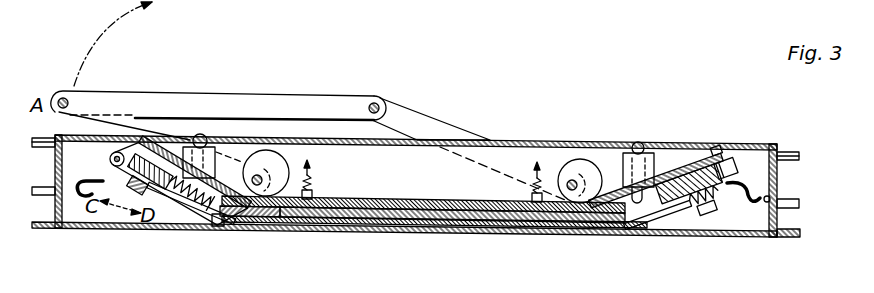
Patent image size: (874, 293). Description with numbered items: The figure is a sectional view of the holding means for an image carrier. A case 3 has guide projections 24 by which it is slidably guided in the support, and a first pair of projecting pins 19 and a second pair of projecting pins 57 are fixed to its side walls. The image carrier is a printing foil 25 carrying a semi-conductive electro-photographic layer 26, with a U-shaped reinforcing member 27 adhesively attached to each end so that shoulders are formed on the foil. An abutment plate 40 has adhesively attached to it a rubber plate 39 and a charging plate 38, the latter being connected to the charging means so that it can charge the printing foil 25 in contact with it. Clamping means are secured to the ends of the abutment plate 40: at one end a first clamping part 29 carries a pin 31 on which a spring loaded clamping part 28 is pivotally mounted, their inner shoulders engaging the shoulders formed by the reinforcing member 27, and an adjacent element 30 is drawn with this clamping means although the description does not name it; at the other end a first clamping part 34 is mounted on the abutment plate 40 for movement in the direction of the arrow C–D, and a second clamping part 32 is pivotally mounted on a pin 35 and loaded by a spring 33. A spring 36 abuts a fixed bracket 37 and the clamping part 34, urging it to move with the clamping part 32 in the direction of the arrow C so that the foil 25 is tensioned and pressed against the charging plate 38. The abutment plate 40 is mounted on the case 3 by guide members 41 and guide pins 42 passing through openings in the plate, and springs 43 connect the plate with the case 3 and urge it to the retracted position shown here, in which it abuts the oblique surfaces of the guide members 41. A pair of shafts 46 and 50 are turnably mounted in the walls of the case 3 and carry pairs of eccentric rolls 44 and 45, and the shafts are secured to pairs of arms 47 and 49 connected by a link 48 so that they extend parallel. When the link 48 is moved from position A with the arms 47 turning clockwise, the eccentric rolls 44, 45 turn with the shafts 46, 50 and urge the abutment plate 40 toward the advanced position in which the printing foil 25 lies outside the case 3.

The case 3 is at (775, 144).
The first pair of projecting pins 19 is at (790, 204).
The guide projections 24 is at (801, 233).
The printing foil 25 is at (198, 212).
The semi-conductive electro-photographic layer 26 is at (238, 218).
The U-shaped reinforcing member 27 is at (138, 184).
The spring loaded clamping part 28 is at (708, 214).
The first clamping part 29 is at (651, 222).
The slide body 30 is at (708, 158).
The pin 31 is at (724, 170).
The second clamping part 32 is at (146, 207).
The spring 33 is at (143, 160).
The first clamping part 34 is at (150, 168).
The pin 35 is at (116, 151).
The spring 36 is at (181, 200).
The fixed bracket 37 is at (218, 226).
The charging plate 38 is at (306, 207).
The rubber plate 39 is at (370, 213).
The abutment plate 40 is at (422, 223).
The guide members 41 is at (657, 178).
The guide pins 42 is at (637, 187).
The springs 43 is at (537, 183).
The eccentric rolls 44 is at (281, 162).
The eccentric rolls 45 is at (588, 163).
The shaft 46 is at (252, 158).
The arms 47 is at (127, 125).
The link 48 is at (291, 95).
The arms 49 is at (433, 130).
The shaft 50 is at (572, 182).
The second pair of projecting pins 57 is at (38, 147).